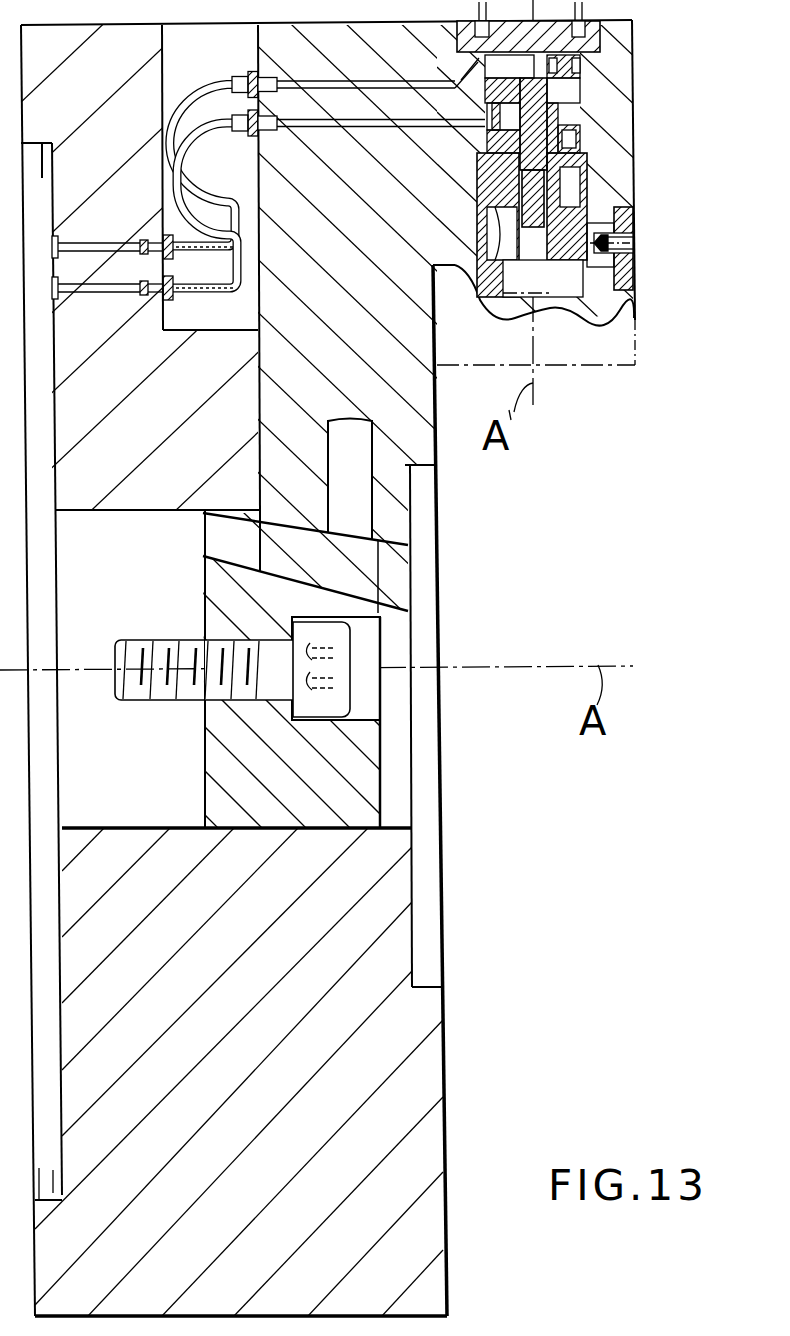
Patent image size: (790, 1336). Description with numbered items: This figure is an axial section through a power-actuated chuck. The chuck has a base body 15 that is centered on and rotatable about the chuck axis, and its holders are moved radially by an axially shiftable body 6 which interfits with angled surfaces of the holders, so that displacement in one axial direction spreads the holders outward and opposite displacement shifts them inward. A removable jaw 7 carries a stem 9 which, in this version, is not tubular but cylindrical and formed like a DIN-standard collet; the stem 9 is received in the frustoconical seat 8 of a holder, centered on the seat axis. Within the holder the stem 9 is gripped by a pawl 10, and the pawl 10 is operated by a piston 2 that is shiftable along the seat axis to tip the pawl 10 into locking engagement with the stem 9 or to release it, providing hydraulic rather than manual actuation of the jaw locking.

The piston 2 is at (560, 120).
The axially shiftable body 6 is at (405, 392).
The jaw 7 is at (584, 335).
The frustoconical seat 8 is at (632, 215).
The stem 9 is at (560, 218).
The pawl 10 is at (565, 157).
The base body 15 is at (400, 1045).